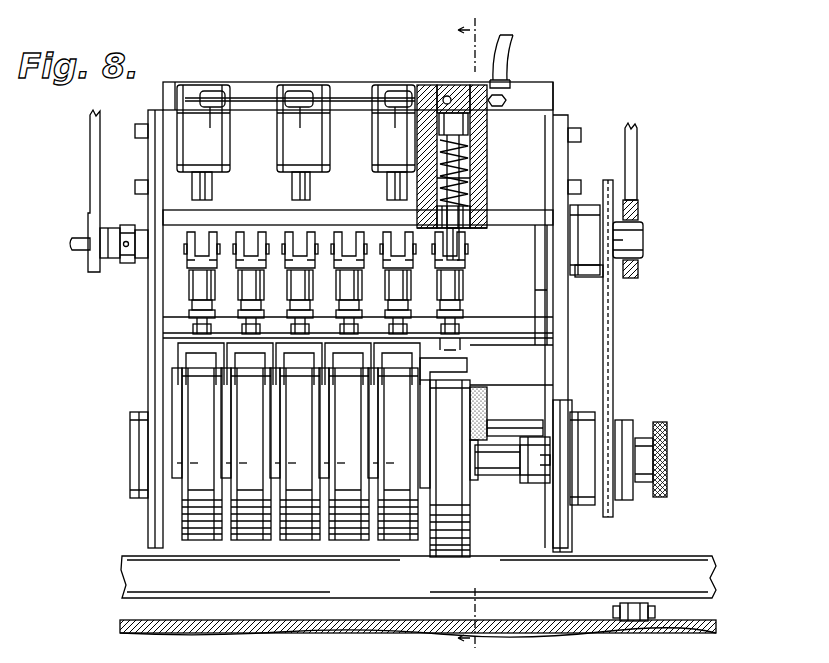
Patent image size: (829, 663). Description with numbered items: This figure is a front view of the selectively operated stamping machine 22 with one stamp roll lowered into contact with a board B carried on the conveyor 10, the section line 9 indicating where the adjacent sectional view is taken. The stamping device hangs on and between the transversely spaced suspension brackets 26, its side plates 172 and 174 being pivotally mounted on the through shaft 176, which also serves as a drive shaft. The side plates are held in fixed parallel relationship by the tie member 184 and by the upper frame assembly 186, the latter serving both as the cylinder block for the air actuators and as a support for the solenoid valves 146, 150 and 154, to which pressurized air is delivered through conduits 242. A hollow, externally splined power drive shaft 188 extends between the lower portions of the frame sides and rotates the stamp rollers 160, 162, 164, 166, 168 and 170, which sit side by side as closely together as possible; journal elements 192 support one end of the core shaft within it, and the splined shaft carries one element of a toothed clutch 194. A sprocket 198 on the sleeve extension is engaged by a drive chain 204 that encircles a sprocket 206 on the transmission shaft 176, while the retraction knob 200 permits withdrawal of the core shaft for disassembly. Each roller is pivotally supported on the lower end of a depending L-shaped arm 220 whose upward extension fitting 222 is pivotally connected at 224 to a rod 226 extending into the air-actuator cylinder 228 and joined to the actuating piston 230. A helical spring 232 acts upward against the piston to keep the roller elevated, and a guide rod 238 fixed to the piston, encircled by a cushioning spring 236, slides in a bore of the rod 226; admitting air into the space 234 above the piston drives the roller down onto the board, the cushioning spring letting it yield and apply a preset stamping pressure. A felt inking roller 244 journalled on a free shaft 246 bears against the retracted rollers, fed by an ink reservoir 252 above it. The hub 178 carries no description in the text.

The section line 9- 9 is at (474, 339).
The conveyor 10 is at (700, 627).
The stamping machine 22 is at (96, 337).
The suspension brackets 26 is at (90, 153).
The solenoid valve 146 is at (190, 148).
The solenoid valve 150 is at (283, 142).
The solenoid valve 154 is at (385, 145).
The stamp roller 160 is at (450, 548).
The stamp roller 162 is at (399, 540).
The stamp roller 164 is at (350, 540).
The stamp roller 166 is at (300, 540).
The stamp roller 168 is at (252, 540).
The stamp roller 170 is at (203, 540).
The side plate 172 is at (150, 385).
The side plate 174 is at (548, 352).
The through shaft 176 is at (72, 243).
The bearing hub 178 is at (640, 220).
The tie member 184 is at (540, 332).
The upper frame assembly 186 is at (545, 125).
The power drive shaft 188 is at (472, 478).
The journal elements 192 is at (556, 505).
The toothed clutch 194 is at (532, 484).
The sprocket 198 is at (608, 512).
The retraction knob 200 is at (668, 433).
The drive chain 204 is at (614, 342).
The sprocket 206 is at (593, 278).
The supporting arm 220 is at (425, 402).
The extension fitting 222 is at (192, 285).
The pivotal connection 224 is at (230, 248).
The rod 226 is at (465, 246).
The air-actuator cylinder 228 is at (478, 163).
The actuating piston 230 is at (468, 130).
The helical spring 232 is at (478, 200).
The cylinder space 234 is at (440, 86).
The cushioning spring 236 is at (478, 182).
The guide rod 238 is at (440, 190).
The conduits 242 is at (348, 97).
The felt roller 244 is at (490, 402).
The free shaft 246 is at (530, 422).
The ink reservoir 252 is at (497, 364).
The board B is at (564, 587).